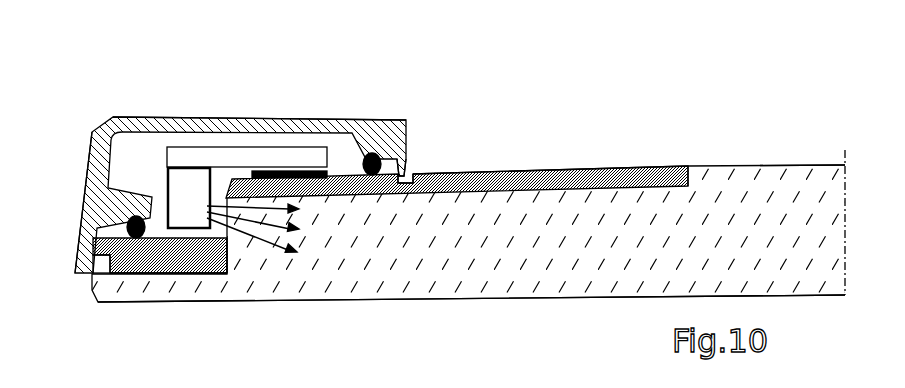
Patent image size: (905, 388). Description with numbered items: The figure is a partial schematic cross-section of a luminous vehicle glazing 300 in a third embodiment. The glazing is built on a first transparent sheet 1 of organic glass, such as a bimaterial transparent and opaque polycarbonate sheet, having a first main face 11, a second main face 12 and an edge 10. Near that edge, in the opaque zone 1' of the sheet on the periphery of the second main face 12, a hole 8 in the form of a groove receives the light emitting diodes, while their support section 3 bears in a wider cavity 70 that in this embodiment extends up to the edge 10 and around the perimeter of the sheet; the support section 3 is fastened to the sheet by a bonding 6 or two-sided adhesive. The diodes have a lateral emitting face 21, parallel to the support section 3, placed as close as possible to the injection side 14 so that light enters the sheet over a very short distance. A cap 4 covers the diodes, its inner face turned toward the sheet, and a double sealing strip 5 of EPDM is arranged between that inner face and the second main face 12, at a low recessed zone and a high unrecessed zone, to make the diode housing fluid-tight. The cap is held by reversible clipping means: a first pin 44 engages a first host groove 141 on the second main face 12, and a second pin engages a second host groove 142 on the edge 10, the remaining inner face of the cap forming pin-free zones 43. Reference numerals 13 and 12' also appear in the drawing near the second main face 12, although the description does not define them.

The luminous vehicle glazing 300 is at (566, 92).
The cap 4 is at (240, 118).
The cavity 70 is at (157, 135).
The pin-free zones 43 is at (135, 196).
The first pin 44 is at (406, 172).
The first host groove 141 is at (413, 177).
The second host groove 142 is at (96, 263).
The injection side 14 is at (200, 180).
The support section 3 is at (317, 153).
The bonding 6 is at (282, 171).
The sealing strip 5 is at (374, 152).
The upper layer 13 is at (543, 168).
The opaque zone 1' is at (390, 237).
The first transparent sheet 1 is at (693, 147).
The second main face 12 is at (766, 139).
The outer surface region 12' is at (802, 138).
The edge 10 is at (92, 288).
The first main face 11 is at (377, 300).
The emitting face 21 is at (194, 262).
The hole 8 is at (205, 275).